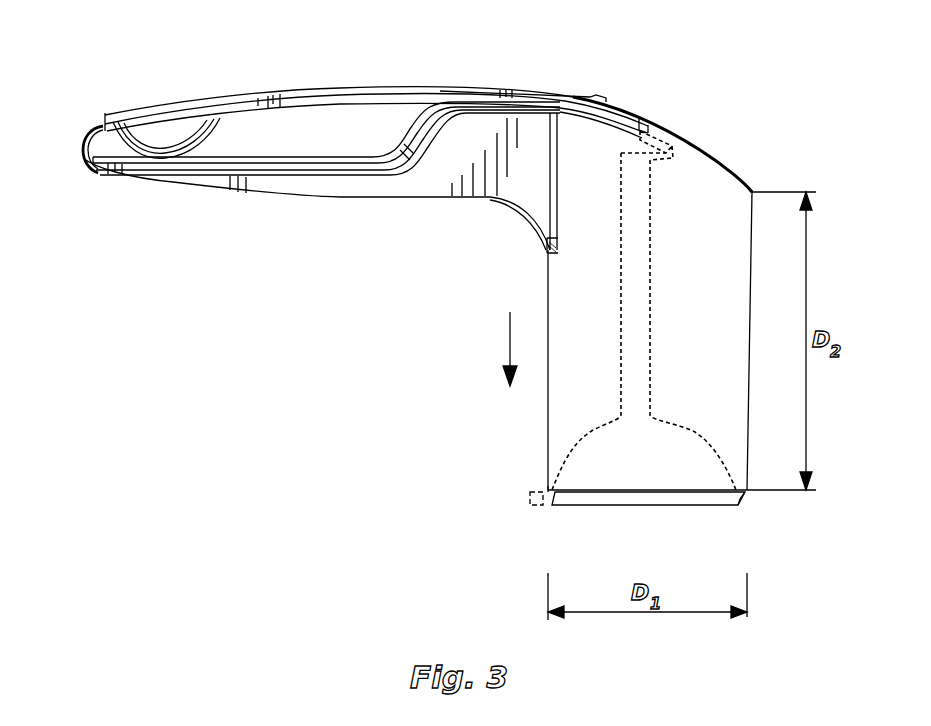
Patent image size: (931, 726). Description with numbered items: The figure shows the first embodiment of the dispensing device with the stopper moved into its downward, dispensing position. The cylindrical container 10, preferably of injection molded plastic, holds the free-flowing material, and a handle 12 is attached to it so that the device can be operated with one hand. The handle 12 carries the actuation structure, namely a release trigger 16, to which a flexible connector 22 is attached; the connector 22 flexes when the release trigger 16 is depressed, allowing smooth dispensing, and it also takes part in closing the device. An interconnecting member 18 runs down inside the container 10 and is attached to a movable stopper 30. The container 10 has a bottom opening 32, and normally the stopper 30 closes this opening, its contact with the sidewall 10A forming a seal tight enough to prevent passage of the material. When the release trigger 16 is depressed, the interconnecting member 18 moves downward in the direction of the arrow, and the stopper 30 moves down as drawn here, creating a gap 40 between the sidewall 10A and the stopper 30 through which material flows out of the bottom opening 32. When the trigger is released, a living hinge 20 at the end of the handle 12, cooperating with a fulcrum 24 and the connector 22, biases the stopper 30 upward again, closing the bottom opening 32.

The container 10 is at (543, 292).
The sidewall 10A is at (548, 491).
The handle 12 is at (354, 201).
The release trigger 16 is at (577, 97).
The interconnecting member 18 is at (657, 261).
The living hinge 20 is at (83, 150).
The connector 22 is at (673, 147).
The fulcrum 24 is at (192, 132).
The stopper 30 is at (717, 505).
The bottom opening 32 is at (741, 500).
The gap 40 is at (530, 496).